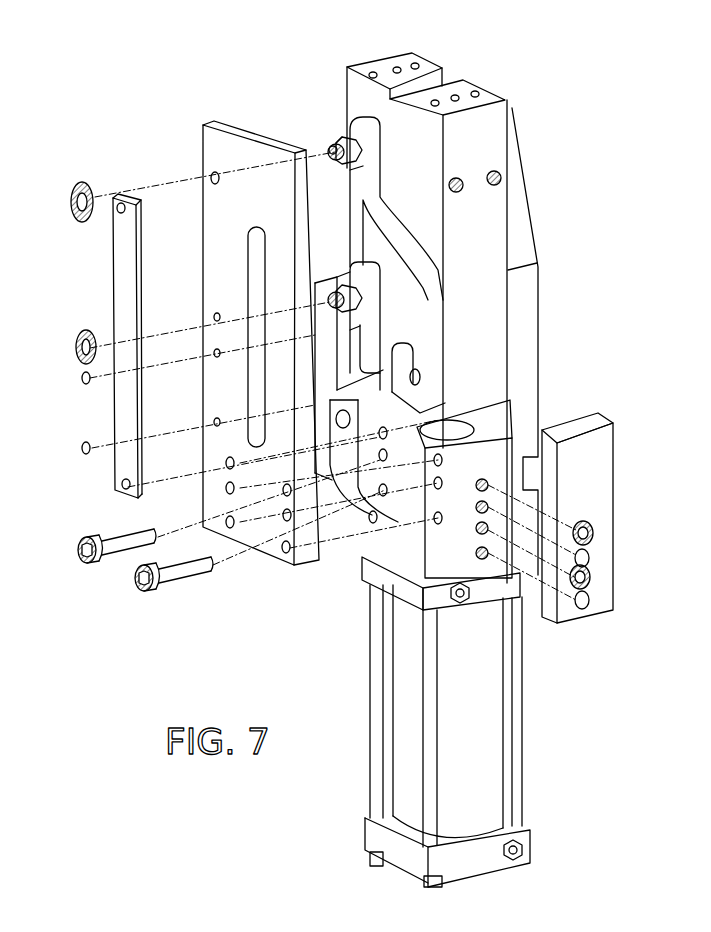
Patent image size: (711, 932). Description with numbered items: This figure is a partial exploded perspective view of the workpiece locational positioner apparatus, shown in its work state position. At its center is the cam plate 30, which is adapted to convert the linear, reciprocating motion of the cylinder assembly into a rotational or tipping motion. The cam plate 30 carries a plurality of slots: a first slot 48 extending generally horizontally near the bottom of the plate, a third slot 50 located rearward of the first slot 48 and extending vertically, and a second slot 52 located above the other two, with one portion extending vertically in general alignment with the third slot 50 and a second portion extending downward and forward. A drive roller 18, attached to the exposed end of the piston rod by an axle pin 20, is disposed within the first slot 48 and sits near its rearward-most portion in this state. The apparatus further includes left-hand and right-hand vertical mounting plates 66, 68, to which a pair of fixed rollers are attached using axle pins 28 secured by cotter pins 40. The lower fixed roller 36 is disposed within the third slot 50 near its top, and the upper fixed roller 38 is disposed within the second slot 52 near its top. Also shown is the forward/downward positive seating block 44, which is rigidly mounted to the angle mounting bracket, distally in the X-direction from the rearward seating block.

The drive roller 18 is at (416, 510).
The axle pin 20 is at (493, 367).
The axle pin 28 is at (260, 183).
The cam plate 30 is at (442, 75).
The lower fixed roller 36 is at (296, 199).
The upper fixed roller 38 is at (305, 86).
The cotter pin 40 is at (50, 318).
The forward/downward positive seating block 44 is at (612, 507).
The first slot 48 is at (348, 502).
The third slot 50 is at (275, 371).
The second slot 52 is at (472, 206).
The vertical mounting plate 66 is at (483, 325).
The vertical mounting plate 68 is at (223, 326).